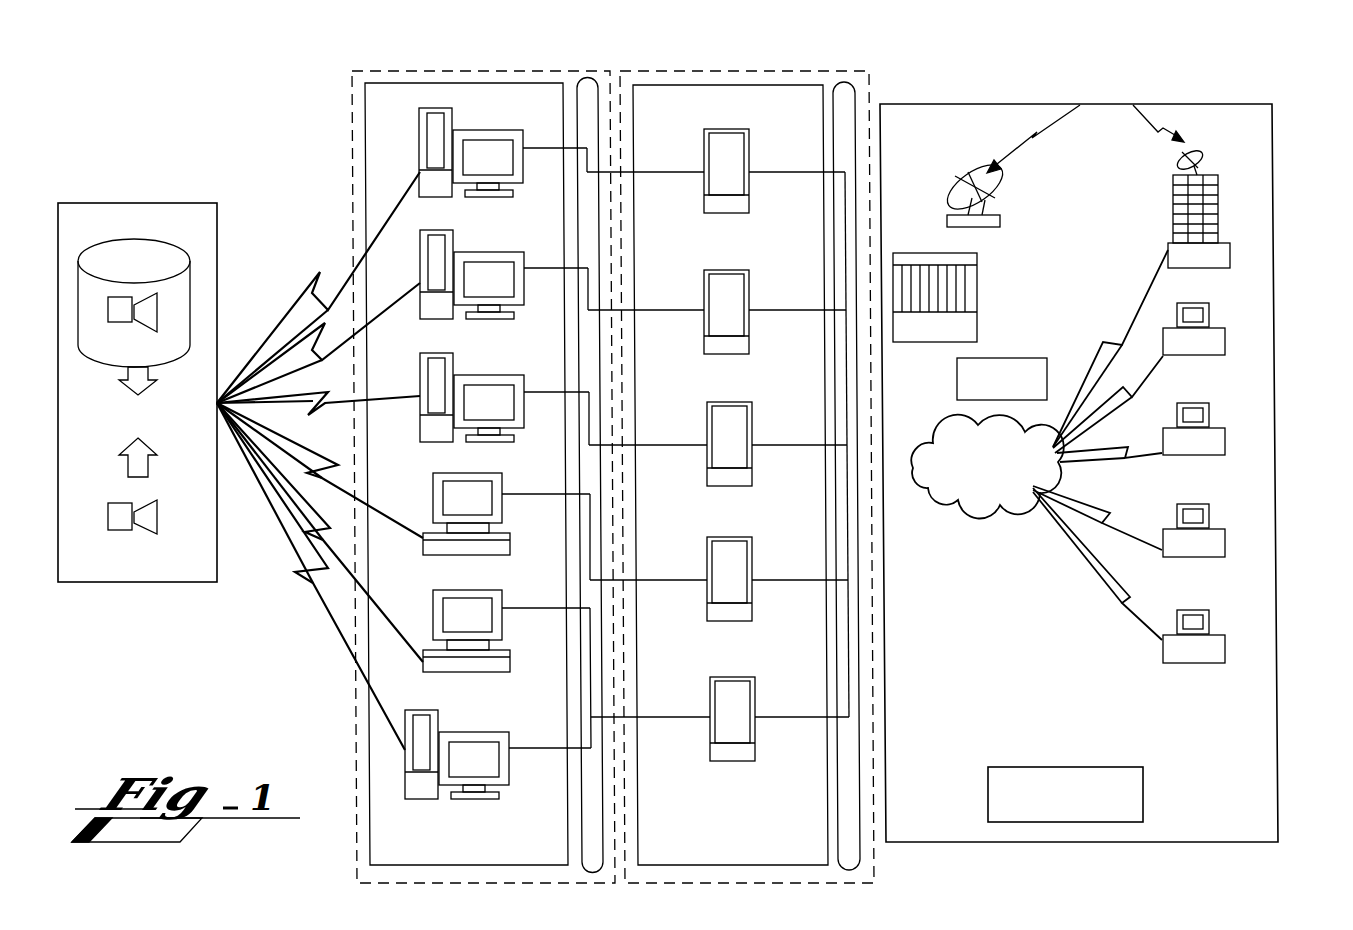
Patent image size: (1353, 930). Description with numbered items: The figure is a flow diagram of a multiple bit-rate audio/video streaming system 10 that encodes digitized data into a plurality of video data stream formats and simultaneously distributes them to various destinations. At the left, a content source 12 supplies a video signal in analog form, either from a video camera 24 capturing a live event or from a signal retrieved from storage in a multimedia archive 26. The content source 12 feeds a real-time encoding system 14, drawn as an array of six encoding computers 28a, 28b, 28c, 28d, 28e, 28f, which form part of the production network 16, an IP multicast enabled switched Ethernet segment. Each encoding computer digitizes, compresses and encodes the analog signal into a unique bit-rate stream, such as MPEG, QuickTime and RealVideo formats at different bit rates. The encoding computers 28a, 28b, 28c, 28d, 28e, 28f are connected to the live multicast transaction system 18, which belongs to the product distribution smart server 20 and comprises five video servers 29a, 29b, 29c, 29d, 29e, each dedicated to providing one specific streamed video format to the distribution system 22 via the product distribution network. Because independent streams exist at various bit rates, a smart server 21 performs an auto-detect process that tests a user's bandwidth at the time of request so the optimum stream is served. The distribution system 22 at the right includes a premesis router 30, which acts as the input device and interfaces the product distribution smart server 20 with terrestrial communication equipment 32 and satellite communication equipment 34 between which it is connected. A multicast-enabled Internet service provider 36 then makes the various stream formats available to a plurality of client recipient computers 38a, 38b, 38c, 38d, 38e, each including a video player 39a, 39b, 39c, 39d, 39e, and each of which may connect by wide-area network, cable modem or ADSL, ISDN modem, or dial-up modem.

The multiple bit-rate audio/video streaming system 10 is at (297, 612).
The content source 12 is at (147, 203).
The real-time encoding system 14 is at (390, 873).
The production network 16 is at (353, 697).
The live multicast transaction system 18 is at (803, 88).
The product distribution smart server 20 is at (863, 885).
The smart server 21 is at (858, 860).
The distribution system 22 is at (1083, 823).
The video camera 24 is at (128, 543).
The multimedia archive 26 is at (160, 250).
The encoding computer 28a is at (419, 127).
The encoding computer 28b is at (435, 319).
The encoding computer 28c is at (447, 442).
The encoding computer 28d is at (502, 511).
The encoding computer 28e is at (470, 673).
The encoding computer 28f is at (472, 800).
The video server 29a is at (704, 148).
The video server 29b is at (728, 270).
The video server 29c is at (728, 402).
The video server 29d is at (797, 540).
The video server 29e is at (710, 746).
The premesis router 30 is at (977, 290).
The terrestrial communication equipment 32 is at (997, 357).
The satellite communication equipment 34 is at (987, 227).
The multicast-enabled Internet service provider 36 is at (1013, 508).
The client recipient computer 38a is at (1230, 243).
The client recipient computer 38b is at (1225, 343).
The client recipient computer 38c is at (1225, 447).
The client recipient computer 38d is at (1225, 543).
The client recipient computer 38e is at (1210, 663).
The video player 39a is at (1218, 190).
The video player 39b is at (1210, 312).
The video player 39c is at (1212, 408).
The video player 39d is at (1212, 517).
The video player 39e is at (1213, 618).